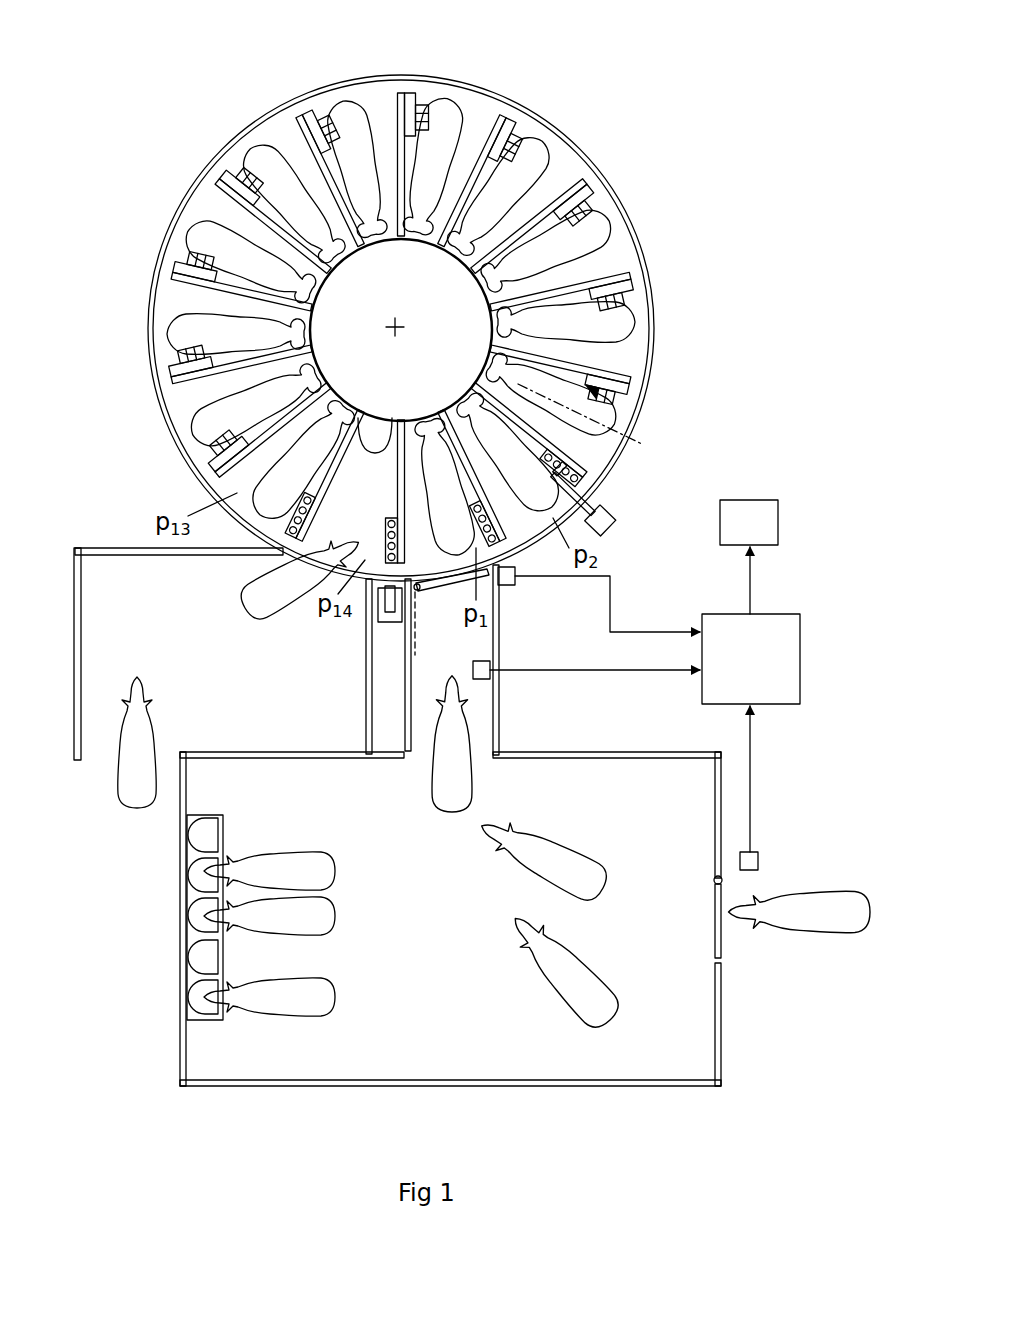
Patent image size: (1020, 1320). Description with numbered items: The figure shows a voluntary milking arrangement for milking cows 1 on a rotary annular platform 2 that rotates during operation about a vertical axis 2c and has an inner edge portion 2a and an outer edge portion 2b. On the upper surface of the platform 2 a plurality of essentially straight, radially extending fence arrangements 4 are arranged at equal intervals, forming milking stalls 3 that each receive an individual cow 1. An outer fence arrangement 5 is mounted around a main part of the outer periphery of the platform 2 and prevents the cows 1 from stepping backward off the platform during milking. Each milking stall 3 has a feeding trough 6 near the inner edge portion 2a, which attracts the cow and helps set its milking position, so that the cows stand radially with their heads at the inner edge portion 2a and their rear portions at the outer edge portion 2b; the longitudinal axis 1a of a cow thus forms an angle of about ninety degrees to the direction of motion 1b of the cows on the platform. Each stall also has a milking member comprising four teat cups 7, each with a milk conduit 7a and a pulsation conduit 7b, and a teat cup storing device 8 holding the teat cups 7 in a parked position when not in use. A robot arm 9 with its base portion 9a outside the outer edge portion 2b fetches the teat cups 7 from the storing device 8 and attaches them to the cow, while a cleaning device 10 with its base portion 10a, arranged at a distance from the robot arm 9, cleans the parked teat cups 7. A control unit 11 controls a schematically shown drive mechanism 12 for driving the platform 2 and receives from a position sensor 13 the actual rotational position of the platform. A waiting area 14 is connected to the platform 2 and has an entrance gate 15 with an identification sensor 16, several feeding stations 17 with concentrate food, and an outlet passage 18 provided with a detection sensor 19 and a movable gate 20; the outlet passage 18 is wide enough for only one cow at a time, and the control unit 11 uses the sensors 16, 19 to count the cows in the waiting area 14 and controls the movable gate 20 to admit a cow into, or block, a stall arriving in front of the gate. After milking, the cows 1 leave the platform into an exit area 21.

The cow 1 is at (262, 155).
The longitudinal axis of the cow 1a is at (592, 427).
The direction of motion of the cows 1b is at (592, 393).
The rotary annular platform 2 is at (565, 165).
The inner edge portion 2a is at (448, 403).
The outer edge portion 2b is at (657, 327).
The vertical axis 2c is at (395, 322).
The milking stall 3 is at (232, 214).
The fence arrangement 4 is at (175, 277).
The outer fence arrangement 5 is at (632, 212).
The feeding trough 6 is at (487, 292).
The teat cup 7 is at (386, 542).
The milk conduit 7a is at (182, 352).
The pulsation conduit 7b is at (190, 373).
The teat cup storing device 8 is at (213, 448).
The robot arm 9 is at (587, 494).
The base portion of the robot arm 9a is at (615, 521).
The cleaning device 10 is at (390, 600).
The base portion of the cleaning device 10a is at (390, 612).
The control unit 11 is at (757, 628).
The drive mechanism 12 is at (745, 497).
The position sensor 13 is at (517, 583).
The waiting area 14 is at (450, 919).
The entrance gate 15 is at (720, 918).
The identification sensor 16 is at (757, 857).
The feeding station 17 is at (207, 833).
The outlet passage 18 is at (487, 697).
The detection sensor 19 is at (492, 668).
The movable gate 20 is at (442, 583).
The exit area 21 is at (223, 667).